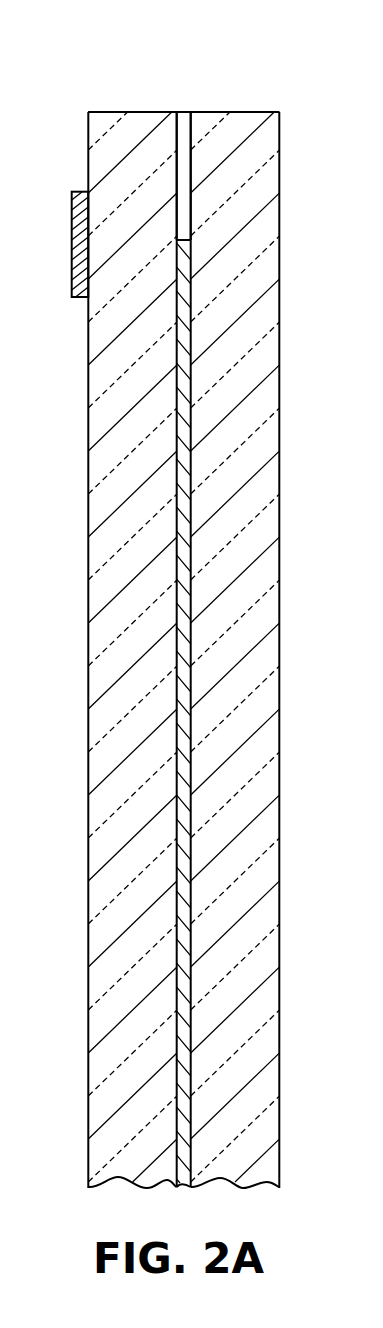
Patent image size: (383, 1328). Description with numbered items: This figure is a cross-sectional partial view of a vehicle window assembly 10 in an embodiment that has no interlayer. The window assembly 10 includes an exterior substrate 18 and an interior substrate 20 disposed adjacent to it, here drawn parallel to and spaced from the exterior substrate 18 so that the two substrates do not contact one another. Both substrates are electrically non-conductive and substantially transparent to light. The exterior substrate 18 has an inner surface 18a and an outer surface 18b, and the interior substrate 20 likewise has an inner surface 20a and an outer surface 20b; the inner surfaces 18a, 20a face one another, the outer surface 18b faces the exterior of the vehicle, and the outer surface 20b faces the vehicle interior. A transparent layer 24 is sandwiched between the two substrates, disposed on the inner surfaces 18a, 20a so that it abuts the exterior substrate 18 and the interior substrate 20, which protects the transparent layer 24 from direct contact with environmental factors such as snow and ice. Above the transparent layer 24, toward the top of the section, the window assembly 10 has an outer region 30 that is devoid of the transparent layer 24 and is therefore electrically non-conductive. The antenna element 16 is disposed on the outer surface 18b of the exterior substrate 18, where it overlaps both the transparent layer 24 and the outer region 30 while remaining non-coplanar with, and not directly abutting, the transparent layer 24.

The window assembly 10 is at (250, 78).
The antenna element 16 is at (73, 242).
The exterior substrate 18 is at (100, 507).
The inner surface of the exterior substrate 18a is at (181, 125).
The outer surface of the exterior substrate 18b is at (88, 133).
The interior substrate 20 is at (267, 520).
The inner surface of the interior substrate 20a is at (186, 125).
The outer surface of the interior substrate 20b is at (279, 135).
The transparent layer 24 is at (182, 827).
The outer region 30 is at (185, 181).